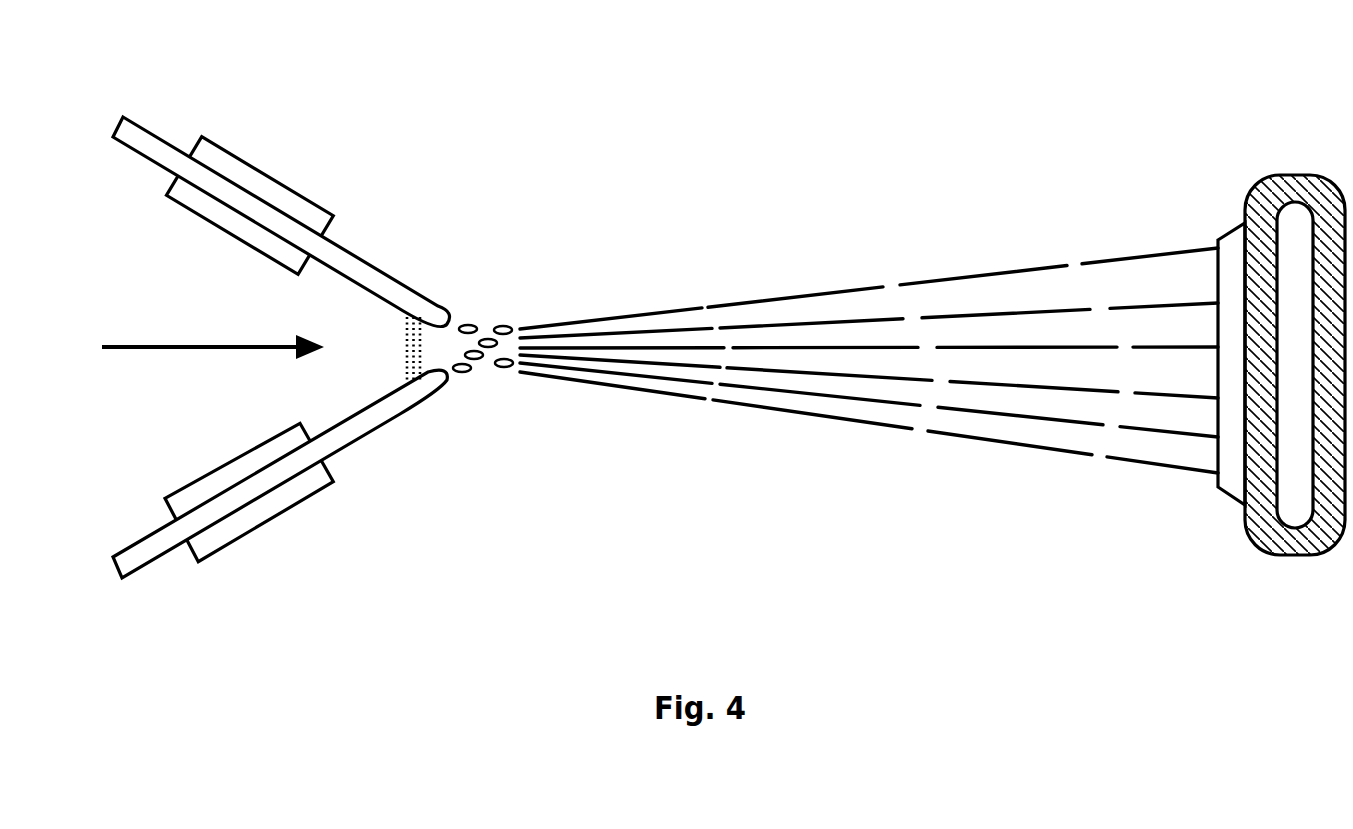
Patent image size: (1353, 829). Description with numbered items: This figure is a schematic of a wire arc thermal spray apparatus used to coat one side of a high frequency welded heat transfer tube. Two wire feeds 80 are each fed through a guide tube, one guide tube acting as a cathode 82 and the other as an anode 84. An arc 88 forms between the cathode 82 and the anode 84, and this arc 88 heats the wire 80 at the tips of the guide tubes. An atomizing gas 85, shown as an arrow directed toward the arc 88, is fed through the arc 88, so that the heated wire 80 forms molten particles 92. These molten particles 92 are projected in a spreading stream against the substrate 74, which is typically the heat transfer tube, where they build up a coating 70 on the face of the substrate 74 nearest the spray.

The coating 70 is at (1243, 228).
The substrate 74 is at (1280, 175).
The wire feed 80 is at (145, 127).
The cathode 82 is at (273, 177).
The anode 84 is at (273, 517).
The atomizing gas 85 is at (195, 347).
The arc 88 is at (423, 350).
The molten particles 92 is at (500, 367).